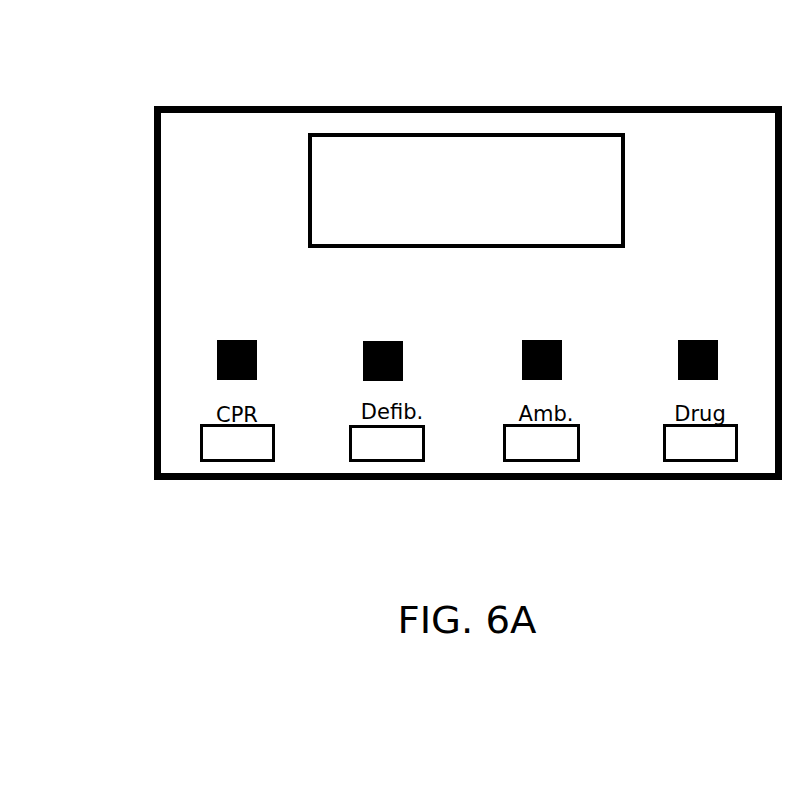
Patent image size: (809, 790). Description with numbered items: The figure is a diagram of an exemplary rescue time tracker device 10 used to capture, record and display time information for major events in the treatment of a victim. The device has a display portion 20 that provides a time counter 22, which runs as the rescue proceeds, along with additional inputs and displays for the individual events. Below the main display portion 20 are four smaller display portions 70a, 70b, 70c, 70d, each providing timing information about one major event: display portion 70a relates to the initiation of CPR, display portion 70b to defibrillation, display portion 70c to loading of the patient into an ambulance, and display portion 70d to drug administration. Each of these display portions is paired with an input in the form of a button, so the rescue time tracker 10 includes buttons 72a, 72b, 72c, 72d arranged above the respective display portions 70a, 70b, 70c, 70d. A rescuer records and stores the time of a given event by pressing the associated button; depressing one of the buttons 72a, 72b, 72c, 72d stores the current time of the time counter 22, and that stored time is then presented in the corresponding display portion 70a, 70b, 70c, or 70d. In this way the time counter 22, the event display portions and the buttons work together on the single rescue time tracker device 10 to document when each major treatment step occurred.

The rescue time tracker device 10 is at (230, 156).
The display portion 20 is at (632, 207).
The time counter 22 is at (452, 162).
The display portion 70a is at (234, 460).
The display portion 70b is at (356, 462).
The display portion 70c is at (541, 456).
The display portion 70d is at (685, 459).
The button 72a is at (232, 336).
The button 72b is at (363, 341).
The button 72c is at (543, 336).
The button 72d is at (703, 336).